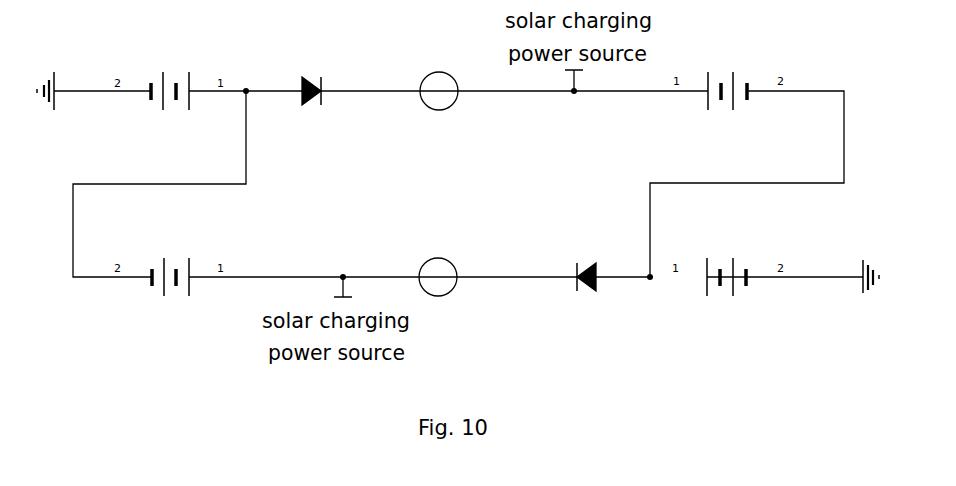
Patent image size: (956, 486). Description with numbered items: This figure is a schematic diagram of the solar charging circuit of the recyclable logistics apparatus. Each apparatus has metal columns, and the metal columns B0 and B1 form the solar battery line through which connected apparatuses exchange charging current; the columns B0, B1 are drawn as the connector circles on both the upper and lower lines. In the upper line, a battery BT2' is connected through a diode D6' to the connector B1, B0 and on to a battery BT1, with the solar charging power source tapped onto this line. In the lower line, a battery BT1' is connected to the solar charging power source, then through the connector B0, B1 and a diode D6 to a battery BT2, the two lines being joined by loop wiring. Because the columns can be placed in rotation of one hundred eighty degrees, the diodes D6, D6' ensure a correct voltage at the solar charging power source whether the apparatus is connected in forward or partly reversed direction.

The battery BT2' is at (188, 92).
The diode D6' is at (309, 91).
The metal column B1 is at (437, 91).
The battery BT1 is at (746, 91).
The battery BT2 is at (746, 278).
The diode D6 is at (579, 278).
The metal column B0 is at (437, 277).
The battery BT1' is at (188, 278).